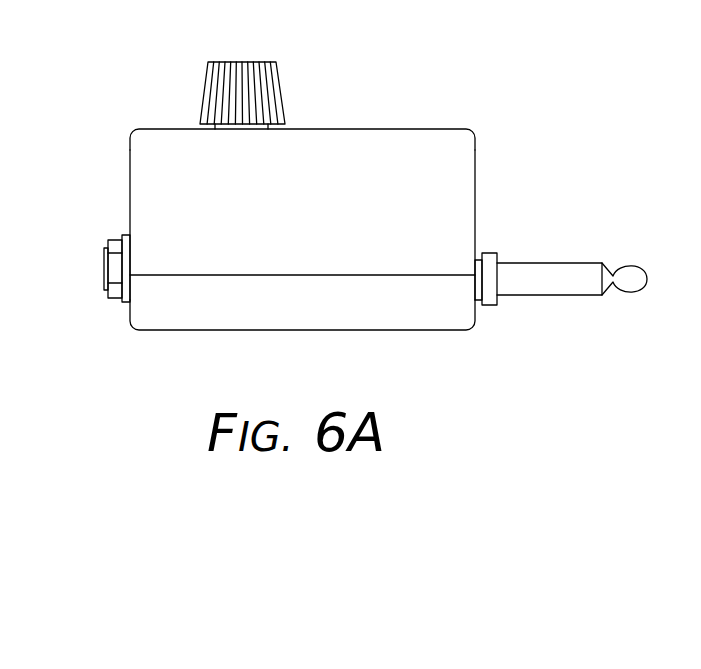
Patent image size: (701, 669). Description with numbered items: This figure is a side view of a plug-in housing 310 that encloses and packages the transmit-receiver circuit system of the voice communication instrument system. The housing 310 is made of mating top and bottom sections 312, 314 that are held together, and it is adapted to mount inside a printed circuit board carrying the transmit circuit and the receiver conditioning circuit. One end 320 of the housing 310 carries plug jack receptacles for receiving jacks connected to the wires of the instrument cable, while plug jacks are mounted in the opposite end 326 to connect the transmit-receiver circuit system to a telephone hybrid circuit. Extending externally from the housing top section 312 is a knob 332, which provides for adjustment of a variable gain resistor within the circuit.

The plug-in housing 310 is at (445, 83).
The top section 312 is at (142, 127).
The bottom section 314 is at (155, 336).
The end 320 is at (130, 204).
The end 326 is at (477, 200).
The knob 332 is at (274, 61).